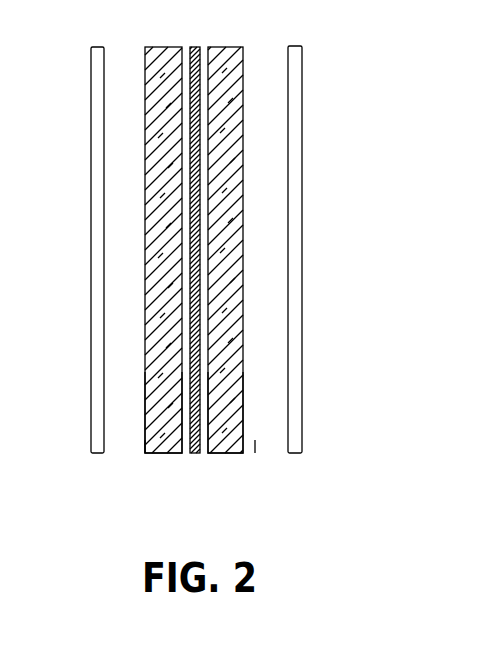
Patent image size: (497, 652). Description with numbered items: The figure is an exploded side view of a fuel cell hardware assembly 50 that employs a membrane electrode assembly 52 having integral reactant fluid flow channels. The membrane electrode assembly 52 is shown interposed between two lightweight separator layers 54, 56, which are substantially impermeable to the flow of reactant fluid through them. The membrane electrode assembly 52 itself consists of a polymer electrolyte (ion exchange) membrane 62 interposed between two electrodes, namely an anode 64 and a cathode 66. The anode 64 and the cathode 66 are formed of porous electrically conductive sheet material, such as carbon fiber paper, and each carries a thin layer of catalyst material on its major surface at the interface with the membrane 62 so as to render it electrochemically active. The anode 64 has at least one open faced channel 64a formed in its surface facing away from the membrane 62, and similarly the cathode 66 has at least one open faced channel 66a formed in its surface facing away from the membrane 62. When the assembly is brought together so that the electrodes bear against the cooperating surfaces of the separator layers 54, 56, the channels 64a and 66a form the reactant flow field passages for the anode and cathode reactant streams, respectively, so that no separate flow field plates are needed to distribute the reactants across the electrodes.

The fuel cell hardware assembly 50 is at (308, 100).
The membrane electrode assembly 52 is at (255, 457).
The separator layer 54 is at (303, 163).
The separator layer 56 is at (92, 149).
The polymer electrolyte membrane 62 is at (201, 23).
The anode 64 is at (226, 48).
The open faced channel 64a is at (245, 371).
The cathode 66 is at (164, 47).
The open faced channel 66a is at (147, 372).